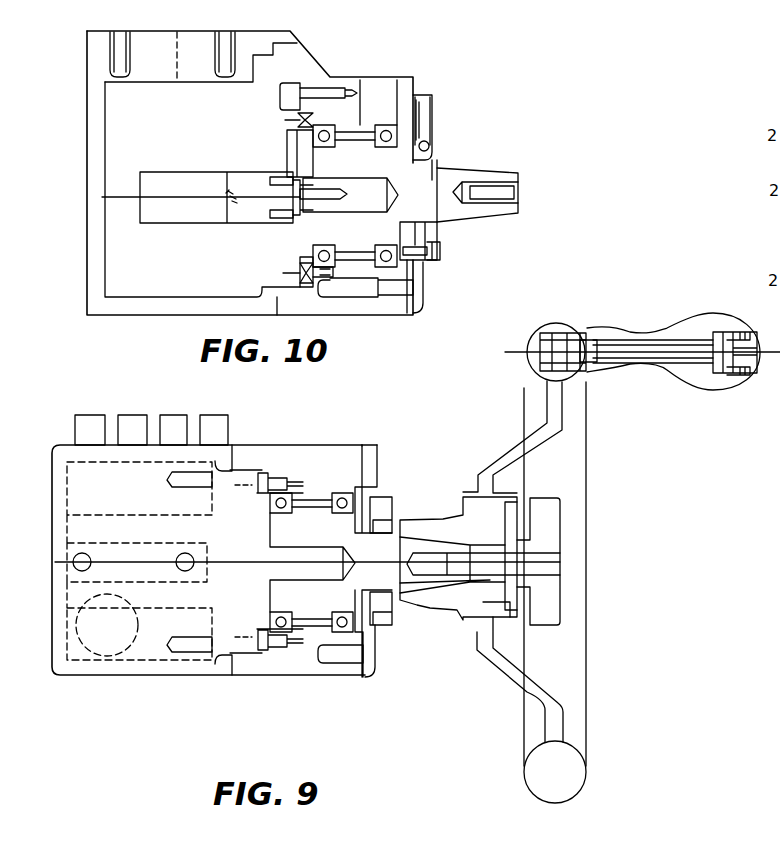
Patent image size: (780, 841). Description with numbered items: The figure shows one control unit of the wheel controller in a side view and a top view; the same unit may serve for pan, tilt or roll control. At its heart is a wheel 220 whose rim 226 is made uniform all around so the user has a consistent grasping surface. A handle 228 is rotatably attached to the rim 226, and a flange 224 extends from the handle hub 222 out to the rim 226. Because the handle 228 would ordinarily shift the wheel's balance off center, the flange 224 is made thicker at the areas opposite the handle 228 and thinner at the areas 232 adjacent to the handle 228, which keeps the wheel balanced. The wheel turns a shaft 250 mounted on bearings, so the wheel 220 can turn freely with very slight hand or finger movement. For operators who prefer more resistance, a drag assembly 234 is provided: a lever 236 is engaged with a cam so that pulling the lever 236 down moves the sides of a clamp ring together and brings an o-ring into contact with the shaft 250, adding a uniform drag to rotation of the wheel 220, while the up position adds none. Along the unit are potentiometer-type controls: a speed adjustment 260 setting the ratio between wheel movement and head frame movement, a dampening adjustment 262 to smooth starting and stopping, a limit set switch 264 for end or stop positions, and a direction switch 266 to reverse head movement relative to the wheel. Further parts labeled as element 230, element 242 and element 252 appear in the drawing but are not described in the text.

In FIG. 9, the wheel 220 is at (455, 613).
In FIG. 9, the handle hub 222 is at (444, 527).
In FIG. 9, the flange 224 is at (542, 695).
In FIG. 9, the rim 226 is at (570, 773).
In FIG. 9, the handle 228 is at (690, 372).
In FIG. 9, the lower lever arm 230 is at (555, 712).
In FIG. 9, the thinner flange areas 232 is at (537, 437).
In FIG. 10, the drag assembly 234 is at (428, 95).
In FIG. 9, the drag assembly 234 is at (387, 494).
In FIG. 10, the lever 236 is at (427, 120).
In FIG. 10, the clamp block 242 is at (437, 230).
In FIG. 10, the shaft 250 is at (420, 183).
In FIG. 10, the drive cylinder 252 is at (167, 208).
In FIG. 9, the speed adjustment 260 is at (90, 420).
In FIG. 9, the dampening adjustment 262 is at (133, 420).
In FIG. 9, the limit set switch 264 is at (173, 420).
In FIG. 9, the direction switch 266 is at (215, 420).